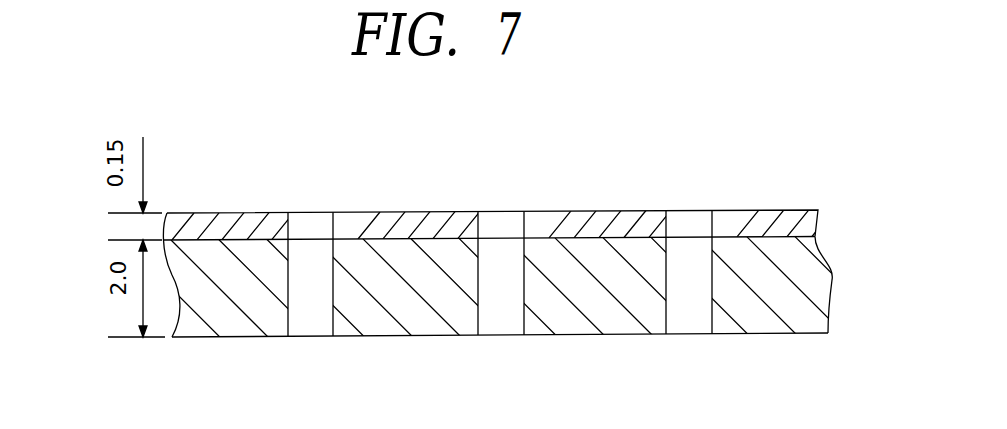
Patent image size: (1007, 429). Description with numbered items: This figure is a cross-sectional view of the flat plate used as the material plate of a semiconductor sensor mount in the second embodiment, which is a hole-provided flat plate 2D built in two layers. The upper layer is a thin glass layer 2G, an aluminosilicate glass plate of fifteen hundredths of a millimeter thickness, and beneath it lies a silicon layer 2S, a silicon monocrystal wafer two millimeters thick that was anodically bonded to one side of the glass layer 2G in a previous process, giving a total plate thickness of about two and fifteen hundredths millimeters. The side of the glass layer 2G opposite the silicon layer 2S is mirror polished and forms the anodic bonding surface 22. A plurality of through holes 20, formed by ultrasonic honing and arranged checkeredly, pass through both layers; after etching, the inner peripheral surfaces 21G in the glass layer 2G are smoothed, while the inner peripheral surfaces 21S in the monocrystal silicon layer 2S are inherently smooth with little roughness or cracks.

The hole-provided flat plate 2D is at (834, 279).
The thin glass layer 2G is at (816, 226).
The silicon layer 2S is at (822, 303).
The anodic bonding surface 22 is at (750, 204).
The inner peripheral surfaces in the glass layer 21G is at (326, 212).
The inner peripheral surfaces in the silicon layer 21S is at (331, 306).
The through holes 20 is at (303, 297).